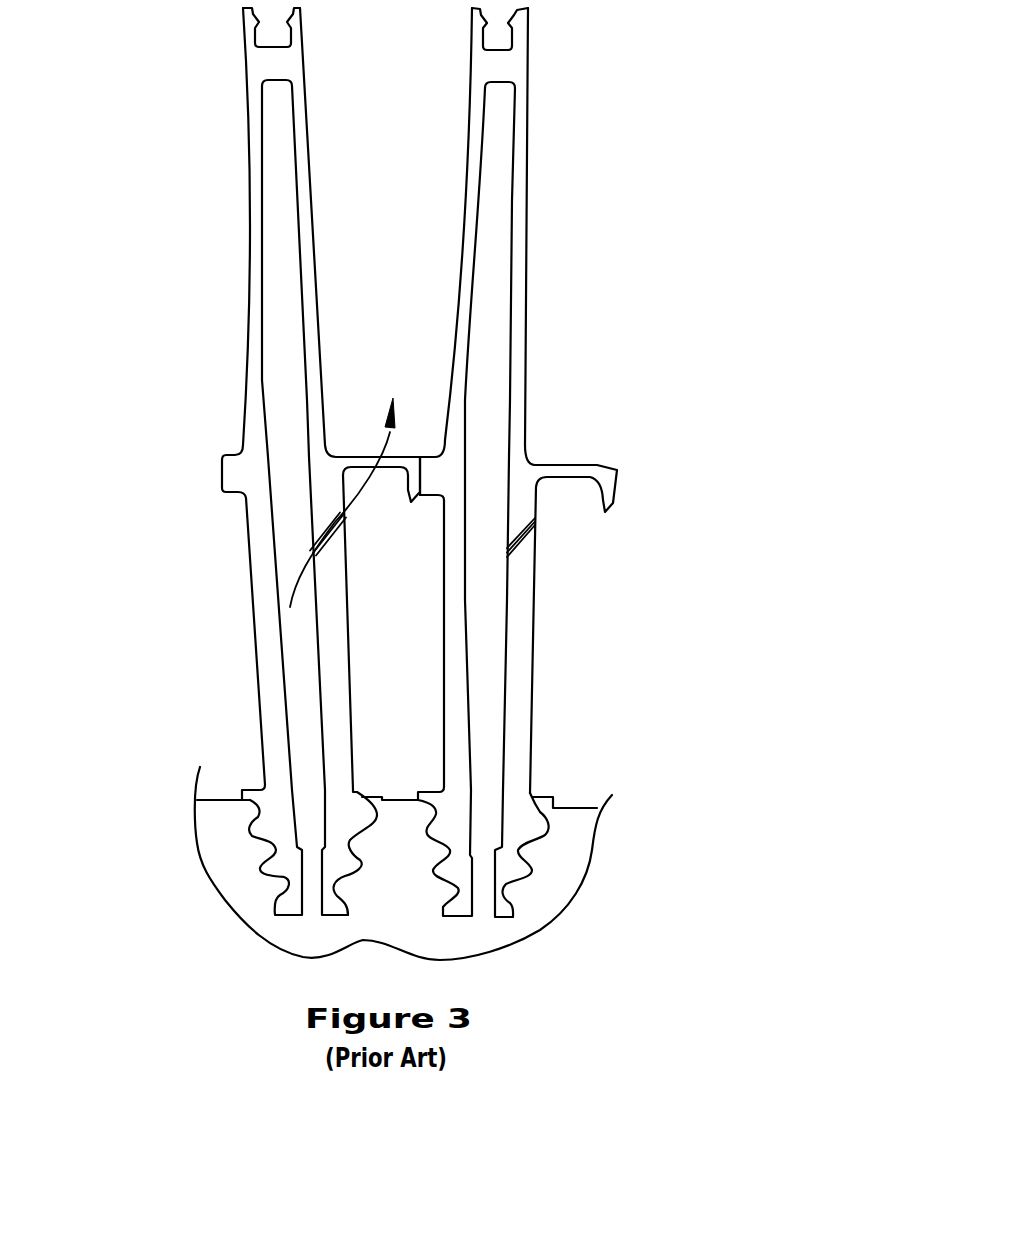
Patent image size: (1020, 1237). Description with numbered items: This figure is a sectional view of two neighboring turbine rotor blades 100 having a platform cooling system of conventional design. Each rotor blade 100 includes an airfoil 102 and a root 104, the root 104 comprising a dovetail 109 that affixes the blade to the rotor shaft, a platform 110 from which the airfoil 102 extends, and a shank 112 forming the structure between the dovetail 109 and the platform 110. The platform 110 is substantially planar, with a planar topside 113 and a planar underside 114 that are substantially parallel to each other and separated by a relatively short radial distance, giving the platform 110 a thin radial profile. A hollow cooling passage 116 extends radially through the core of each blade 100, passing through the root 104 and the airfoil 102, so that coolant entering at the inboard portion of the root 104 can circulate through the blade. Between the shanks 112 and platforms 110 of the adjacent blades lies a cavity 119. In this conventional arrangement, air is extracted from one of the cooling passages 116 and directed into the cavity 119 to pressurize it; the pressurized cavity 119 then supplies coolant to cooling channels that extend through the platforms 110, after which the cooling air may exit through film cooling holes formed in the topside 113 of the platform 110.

The turbine rotor blade 100 is at (347, 205).
The airfoil 102 is at (250, 284).
The root 104 is at (648, 717).
The dovetail 109 is at (518, 873).
The platform 110 is at (378, 457).
The shank 112 is at (195, 677).
The topside of platform 113 is at (412, 457).
The underside of platform 114 is at (393, 470).
The cooling passage 116 is at (283, 517).
The cavity 119 is at (417, 629).